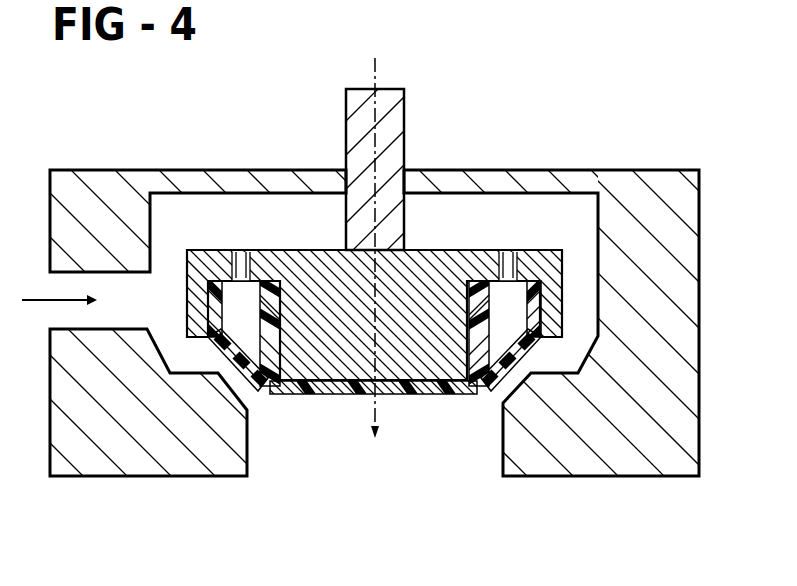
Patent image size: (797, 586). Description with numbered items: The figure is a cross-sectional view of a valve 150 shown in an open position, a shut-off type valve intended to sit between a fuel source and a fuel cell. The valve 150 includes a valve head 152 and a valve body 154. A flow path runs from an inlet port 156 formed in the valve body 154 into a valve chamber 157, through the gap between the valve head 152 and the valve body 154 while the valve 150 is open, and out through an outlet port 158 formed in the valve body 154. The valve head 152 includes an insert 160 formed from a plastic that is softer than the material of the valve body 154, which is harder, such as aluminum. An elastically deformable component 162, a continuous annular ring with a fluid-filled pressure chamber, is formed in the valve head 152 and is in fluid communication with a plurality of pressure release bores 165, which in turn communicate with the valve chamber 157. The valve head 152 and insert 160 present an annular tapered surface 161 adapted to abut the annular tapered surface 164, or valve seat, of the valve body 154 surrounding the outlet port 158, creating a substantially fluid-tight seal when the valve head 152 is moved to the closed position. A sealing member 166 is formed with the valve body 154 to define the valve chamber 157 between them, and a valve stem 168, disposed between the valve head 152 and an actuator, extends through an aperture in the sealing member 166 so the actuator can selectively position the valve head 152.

The valve 150 is at (523, 56).
The valve head 152 is at (486, 242).
The valve body 154 is at (544, 486).
The inlet port 156 is at (82, 272).
The valve chamber 157 is at (208, 223).
The outlet port 158 is at (247, 455).
The insert 160 is at (282, 396).
The annular tapered surface 161 is at (513, 371).
The elastically deformable component 162 is at (230, 330).
The annular tapered surface 164 is at (235, 383).
The pressure release bores 165 is at (240, 272).
The sealing member 166 is at (472, 193).
The valve stem 168 is at (404, 145).